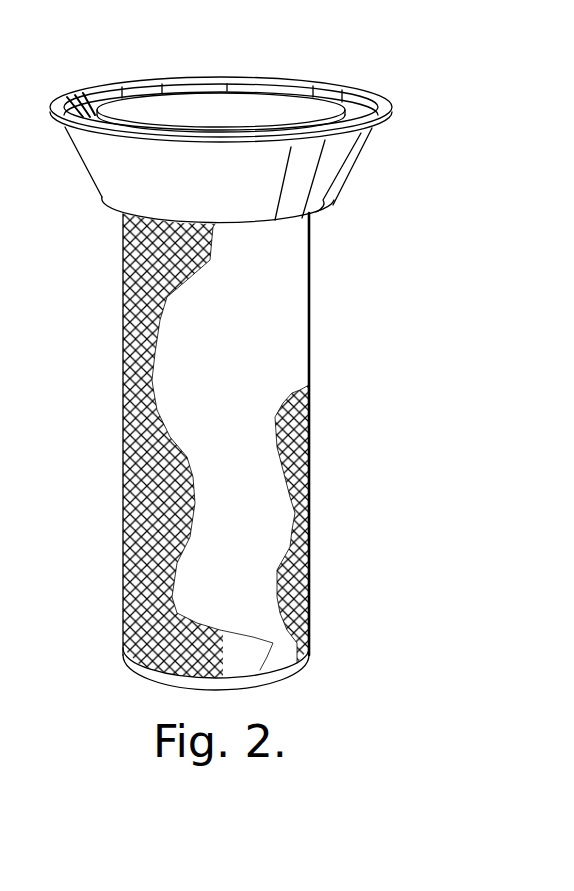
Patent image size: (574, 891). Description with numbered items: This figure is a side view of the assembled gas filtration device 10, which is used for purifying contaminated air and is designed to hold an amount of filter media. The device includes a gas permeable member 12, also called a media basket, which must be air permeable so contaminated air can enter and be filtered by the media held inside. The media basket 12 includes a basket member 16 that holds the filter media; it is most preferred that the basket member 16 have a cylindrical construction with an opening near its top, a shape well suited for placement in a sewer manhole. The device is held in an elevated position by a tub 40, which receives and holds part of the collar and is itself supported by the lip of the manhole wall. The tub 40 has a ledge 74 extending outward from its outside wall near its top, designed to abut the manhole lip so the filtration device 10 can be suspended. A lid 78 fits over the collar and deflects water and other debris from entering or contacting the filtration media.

The filtration device 10 is at (90, 271).
The gas permeable member 12 is at (335, 317).
The basket member 16 is at (251, 530).
The tub 40 is at (68, 178).
The ledge 74 is at (62, 107).
The lid 78 is at (227, 108).